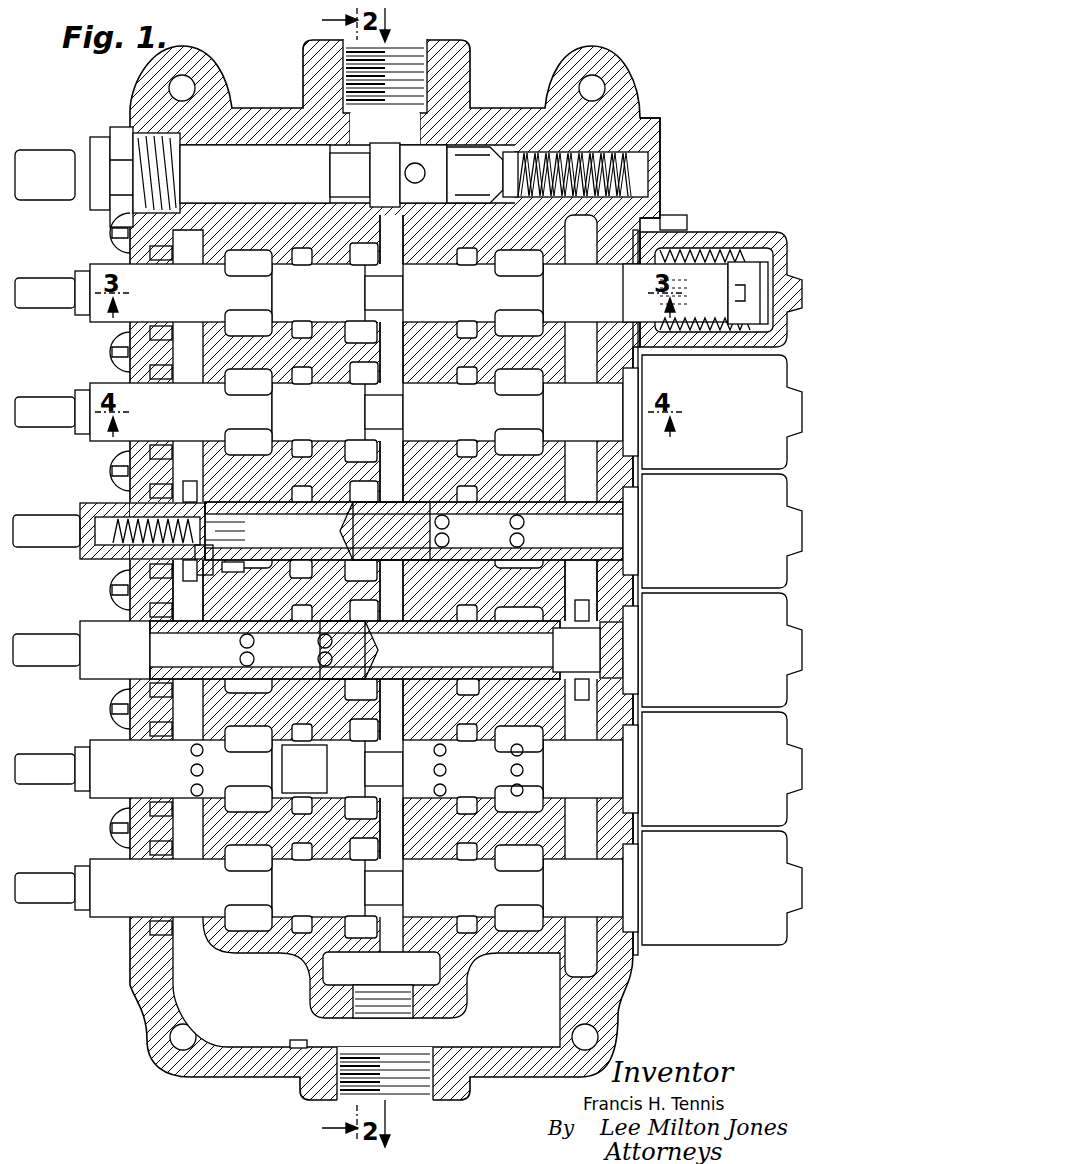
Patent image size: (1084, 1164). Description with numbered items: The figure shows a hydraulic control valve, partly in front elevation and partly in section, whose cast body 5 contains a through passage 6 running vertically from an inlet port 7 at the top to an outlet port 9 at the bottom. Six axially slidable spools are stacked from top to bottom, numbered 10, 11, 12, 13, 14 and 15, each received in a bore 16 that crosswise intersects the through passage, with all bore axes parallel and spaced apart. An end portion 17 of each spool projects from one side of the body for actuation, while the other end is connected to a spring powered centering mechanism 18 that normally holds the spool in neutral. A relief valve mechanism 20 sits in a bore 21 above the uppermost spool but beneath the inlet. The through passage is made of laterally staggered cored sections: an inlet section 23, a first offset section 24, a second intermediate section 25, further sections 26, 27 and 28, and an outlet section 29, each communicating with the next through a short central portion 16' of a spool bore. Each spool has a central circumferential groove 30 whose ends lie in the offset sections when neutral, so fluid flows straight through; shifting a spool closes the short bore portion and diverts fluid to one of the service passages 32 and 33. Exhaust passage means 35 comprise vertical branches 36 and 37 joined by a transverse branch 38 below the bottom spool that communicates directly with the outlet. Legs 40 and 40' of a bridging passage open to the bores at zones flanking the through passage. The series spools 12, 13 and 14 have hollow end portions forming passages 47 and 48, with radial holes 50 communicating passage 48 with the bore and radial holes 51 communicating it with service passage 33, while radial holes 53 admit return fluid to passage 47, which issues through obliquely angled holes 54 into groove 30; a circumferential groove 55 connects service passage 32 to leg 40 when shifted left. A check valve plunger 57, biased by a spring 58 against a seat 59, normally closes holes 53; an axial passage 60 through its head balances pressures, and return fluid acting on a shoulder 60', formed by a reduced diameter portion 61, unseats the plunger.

The body 5 is at (636, 76).
The through passage 6 is at (406, 36).
The inlet port 7 is at (408, 68).
The outlet port 9 is at (412, 1085).
The valve spool 10 is at (105, 255).
The valve spool 11 is at (105, 375).
The series spool 12 is at (105, 500).
The series spool 13 is at (105, 625).
The series spool 14 is at (105, 745).
The valve spool 15 is at (108, 862).
The bore 16 is at (326, 590).
The short central portion of bore 16' is at (384, 590).
The end portion of spool 17 is at (102, 322).
The centering mechanism 18 is at (712, 226).
The relief valve mechanism 20 is at (668, 150).
The bore 21 is at (305, 140).
The inlet section 23 is at (372, 238).
The first offset section 24 is at (416, 356).
The second intermediate section 25 is at (372, 470).
The through passage section 26 is at (416, 592).
The through passage section 27 is at (372, 702).
The through passage section 28 is at (416, 820).
The outlet section 29 is at (358, 935).
The circumferential groove 30 is at (386, 310).
The service passage 32 is at (256, 273).
The service passage 33 is at (527, 273).
The exhaust passage means 35 is at (258, 1032).
The vertical branch 36 is at (198, 609).
The vertical branch 37 is at (592, 585).
The transverse branch 38 is at (297, 1050).
The leg of bridging passage 40 is at (318, 587).
The leg of bridging passage 40' is at (409, 587).
The passage 47 is at (305, 514).
The passage 48 is at (455, 520).
The radial holes 50 is at (450, 540).
The radial holes 51 is at (524, 540).
The radial holes 53 is at (576, 695).
The obliquely angled holes 54 is at (352, 531).
The circumferential groove 55 is at (292, 757).
The check valve plunger 57 is at (552, 645).
The spring 58 is at (120, 560).
The seat 59 is at (552, 657).
The axial passage 60 is at (223, 550).
The shoulder 60' is at (399, 621).
The reduced diameter portion 61 is at (576, 662).